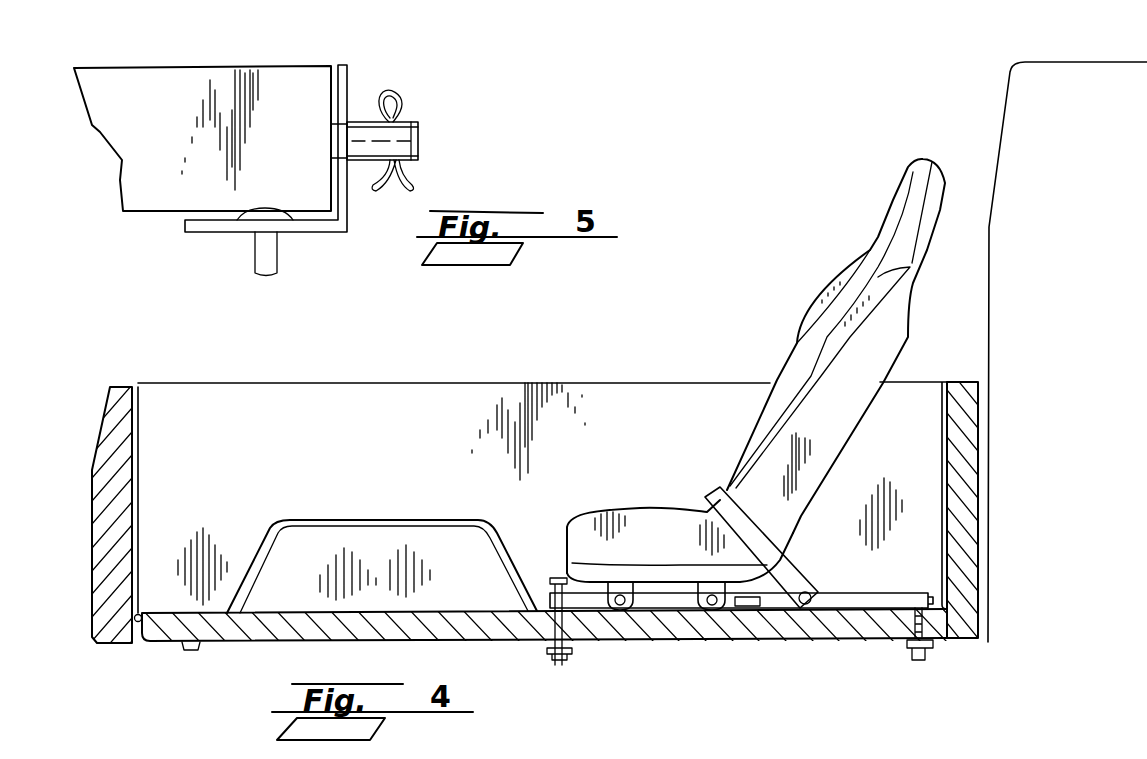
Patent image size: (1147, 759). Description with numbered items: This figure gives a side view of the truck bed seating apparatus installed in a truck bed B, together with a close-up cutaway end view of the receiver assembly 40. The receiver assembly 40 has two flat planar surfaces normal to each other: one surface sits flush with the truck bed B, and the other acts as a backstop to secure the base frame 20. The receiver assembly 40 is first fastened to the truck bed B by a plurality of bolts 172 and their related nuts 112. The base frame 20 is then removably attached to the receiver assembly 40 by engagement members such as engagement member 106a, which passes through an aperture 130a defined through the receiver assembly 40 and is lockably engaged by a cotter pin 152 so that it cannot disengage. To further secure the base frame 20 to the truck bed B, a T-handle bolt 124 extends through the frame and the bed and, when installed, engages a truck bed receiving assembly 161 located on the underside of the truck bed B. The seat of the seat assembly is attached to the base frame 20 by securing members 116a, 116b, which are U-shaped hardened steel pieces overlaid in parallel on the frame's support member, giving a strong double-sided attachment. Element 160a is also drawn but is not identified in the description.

In FIG. 5, the mounting block 20 is at (222, 76).
In FIG. 5, the mounting bracket 40 is at (340, 63).
In FIG. 5, the pin 106a is at (418, 138).
In FIG. 5, the retaining clip 130a is at (348, 122).
In FIG. 5, the clip legs 152 is at (408, 168).
In FIG. 5, the stud 172 is at (277, 248).
In FIG. 4, the stud 172 is at (913, 615).
In FIG. 4, the tray base 112 is at (897, 690).
In FIG. 4, the tray liner 160a is at (547, 382).
In FIG. 4, the raised hump 124 is at (548, 580).
In FIG. 4, the seat assembly B is at (690, 640).
In FIG. 4, the front mounting bolt 116b is at (612, 597).
In FIG. 4, the rear mounting 116a is at (745, 613).
In FIG. 4, the fastener nut 161 is at (203, 655).